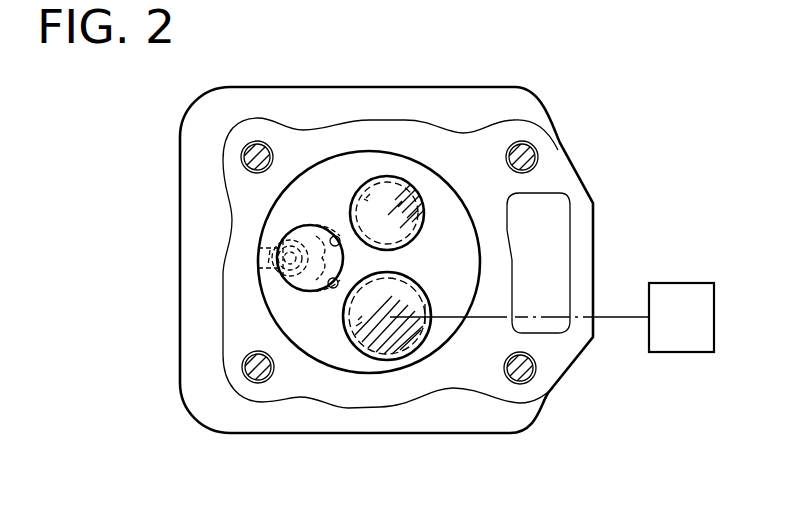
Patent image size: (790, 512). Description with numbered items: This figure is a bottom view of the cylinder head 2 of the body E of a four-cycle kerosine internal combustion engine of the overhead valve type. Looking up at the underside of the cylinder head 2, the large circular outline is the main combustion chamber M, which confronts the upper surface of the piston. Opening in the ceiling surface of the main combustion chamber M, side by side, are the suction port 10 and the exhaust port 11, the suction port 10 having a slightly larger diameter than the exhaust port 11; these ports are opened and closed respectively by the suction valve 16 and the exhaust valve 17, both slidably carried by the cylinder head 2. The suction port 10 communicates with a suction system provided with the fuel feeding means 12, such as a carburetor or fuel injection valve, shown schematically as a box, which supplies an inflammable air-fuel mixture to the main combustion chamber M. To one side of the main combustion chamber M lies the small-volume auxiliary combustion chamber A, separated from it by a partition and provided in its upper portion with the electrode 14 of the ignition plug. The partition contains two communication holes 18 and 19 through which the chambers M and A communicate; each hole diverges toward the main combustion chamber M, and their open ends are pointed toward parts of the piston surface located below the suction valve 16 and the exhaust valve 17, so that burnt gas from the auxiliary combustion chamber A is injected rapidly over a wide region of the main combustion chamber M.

The cylinder head 2 is at (562, 152).
The suction port 10 is at (354, 343).
The exhaust port 11 is at (362, 192).
The fuel feeding means 12 is at (696, 329).
The electrode 14 is at (289, 243).
The suction valve 16 is at (424, 290).
The exhaust valve 17 is at (422, 228).
The communication hole 18 is at (308, 286).
The communication hole 19 is at (320, 240).
The auxiliary combustion chamber A is at (297, 279).
The main combustion chamber M is at (433, 274).
The body E is at (547, 95).